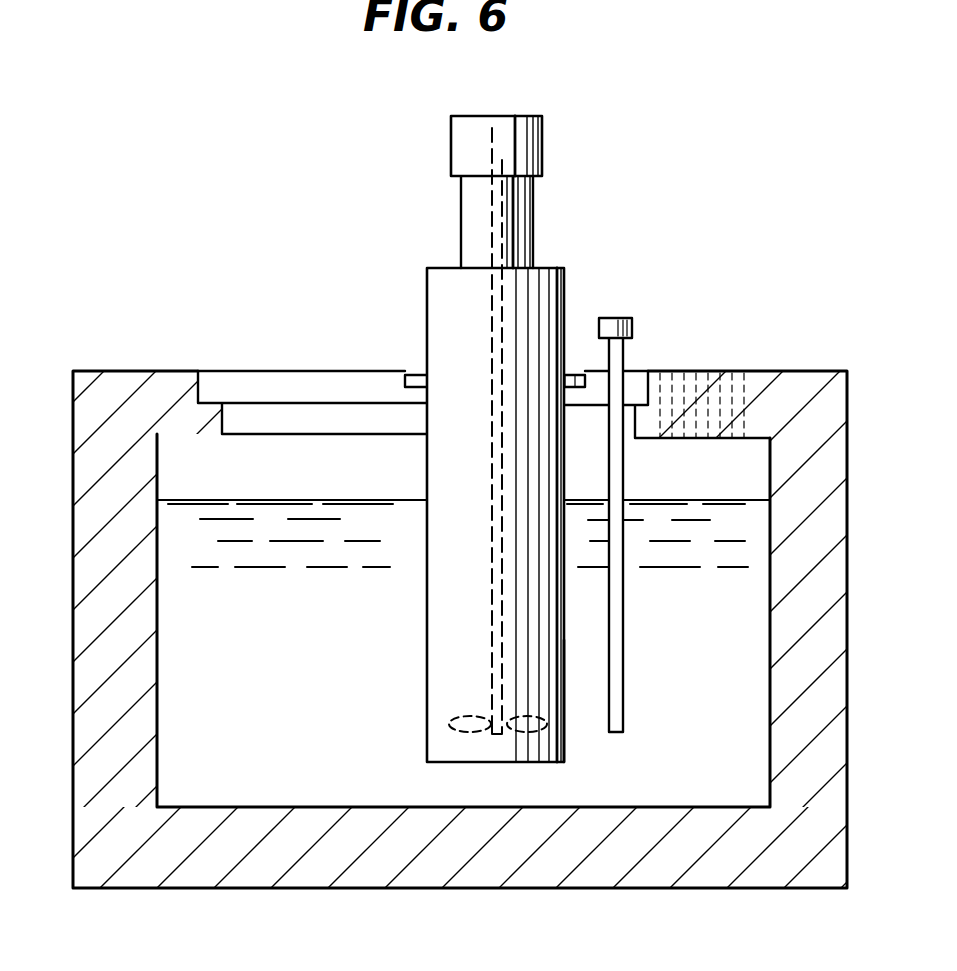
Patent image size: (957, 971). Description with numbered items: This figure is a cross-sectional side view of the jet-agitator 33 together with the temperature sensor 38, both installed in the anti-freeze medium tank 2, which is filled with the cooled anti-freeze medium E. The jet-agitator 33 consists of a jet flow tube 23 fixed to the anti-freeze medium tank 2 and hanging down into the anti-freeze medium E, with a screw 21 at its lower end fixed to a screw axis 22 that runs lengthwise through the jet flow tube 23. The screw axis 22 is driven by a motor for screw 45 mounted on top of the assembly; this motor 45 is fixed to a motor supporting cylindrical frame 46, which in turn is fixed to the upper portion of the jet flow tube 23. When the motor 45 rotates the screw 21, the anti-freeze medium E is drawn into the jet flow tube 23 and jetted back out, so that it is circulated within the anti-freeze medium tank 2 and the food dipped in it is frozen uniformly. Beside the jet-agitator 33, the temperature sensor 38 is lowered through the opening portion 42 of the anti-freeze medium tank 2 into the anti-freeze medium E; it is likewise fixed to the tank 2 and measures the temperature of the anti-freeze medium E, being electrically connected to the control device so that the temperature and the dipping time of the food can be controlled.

The anti-freeze medium tank 2 is at (76, 490).
The screw 21 is at (468, 732).
The screw axis 22 is at (490, 217).
The jet flow tube 23 is at (427, 303).
The jet-agitator 33 is at (563, 700).
The temperature sensor 38 is at (619, 318).
The opening portion of the anti-freeze medium tank 42 is at (306, 392).
The motor for screw 45 is at (530, 147).
The motor supporting cylindrical frame 46 is at (533, 237).
The anti-freeze medium E is at (727, 502).